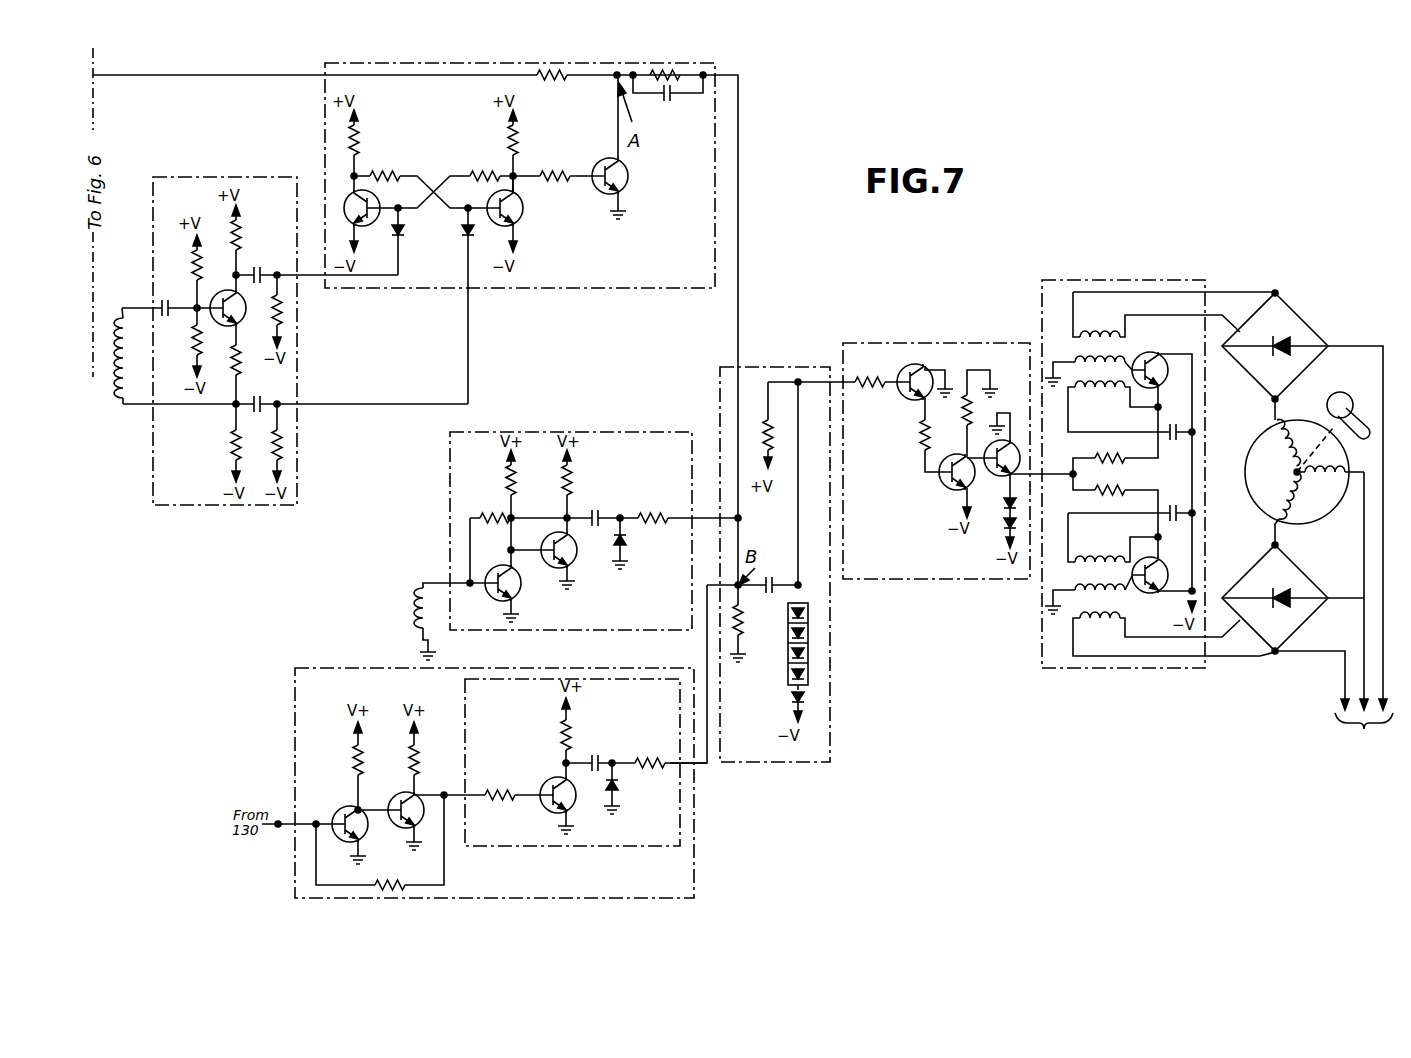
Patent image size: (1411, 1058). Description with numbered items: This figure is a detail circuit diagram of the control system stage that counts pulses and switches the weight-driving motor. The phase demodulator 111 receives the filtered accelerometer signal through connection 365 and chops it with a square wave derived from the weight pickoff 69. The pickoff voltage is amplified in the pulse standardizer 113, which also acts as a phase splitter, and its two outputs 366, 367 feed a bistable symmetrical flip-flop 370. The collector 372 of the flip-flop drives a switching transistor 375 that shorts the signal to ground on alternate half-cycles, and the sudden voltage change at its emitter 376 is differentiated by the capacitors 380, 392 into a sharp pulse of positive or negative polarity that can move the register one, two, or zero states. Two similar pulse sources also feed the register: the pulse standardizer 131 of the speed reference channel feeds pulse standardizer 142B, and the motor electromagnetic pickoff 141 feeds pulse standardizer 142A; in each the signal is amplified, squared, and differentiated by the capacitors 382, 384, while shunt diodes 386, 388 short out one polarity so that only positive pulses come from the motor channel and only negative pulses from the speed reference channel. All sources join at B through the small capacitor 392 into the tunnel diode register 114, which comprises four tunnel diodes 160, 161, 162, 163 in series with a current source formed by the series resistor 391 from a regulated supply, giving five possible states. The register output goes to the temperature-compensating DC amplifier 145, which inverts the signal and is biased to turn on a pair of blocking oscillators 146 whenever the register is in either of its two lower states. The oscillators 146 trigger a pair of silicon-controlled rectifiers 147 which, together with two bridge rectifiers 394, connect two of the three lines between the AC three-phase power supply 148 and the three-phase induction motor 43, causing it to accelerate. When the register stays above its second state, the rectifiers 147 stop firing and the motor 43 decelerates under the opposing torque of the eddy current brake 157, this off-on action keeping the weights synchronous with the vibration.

The filtered accelerometer signal connection 365 is at (156, 74).
The phase demodulator 111 is at (541, 62).
The pulse standardizer 113 is at (216, 176).
The bistable symmetrical flip-flop 370 is at (433, 165).
The collector of the flip-flop 372 is at (516, 191).
The switching transistor 375 is at (625, 191).
The emitter 376 is at (616, 131).
The capacitor 380 is at (666, 108).
The standardizer output 366 is at (312, 278).
The standardizer output 367 is at (323, 404).
The weight pickoff 69 is at (106, 372).
The pulse standardizer 142A is at (597, 431).
The capacitor 382 is at (597, 512).
The shunt diode 386 is at (627, 541).
The electromagnetic pickoff 141 is at (416, 602).
The tunnel diode register 114 is at (831, 662).
The series resistor 391 is at (768, 418).
The capacitor 392 is at (770, 577).
The tunnel diode 160 is at (789, 614).
The tunnel diode 161 is at (789, 634).
The tunnel diode 162 is at (789, 654).
The tunnel diode 163 is at (789, 674).
The temperature-compensating amplifier 145 is at (919, 341).
The blocking oscillators 146 is at (1122, 281).
The bridge rectifiers 394 is at (1304, 376).
The silicon-controlled rectifiers 147 is at (1283, 347).
The AC three-phase power supply 148 is at (1334, 547).
The three-phase induction motor 43 is at (1265, 442).
The eddy current brake 157 is at (1326, 405).
The pulse standardizer 131 is at (345, 668).
The pulse standardizer 142B is at (576, 848).
The capacitor 384 is at (596, 760).
The shunt diode 388 is at (618, 783).